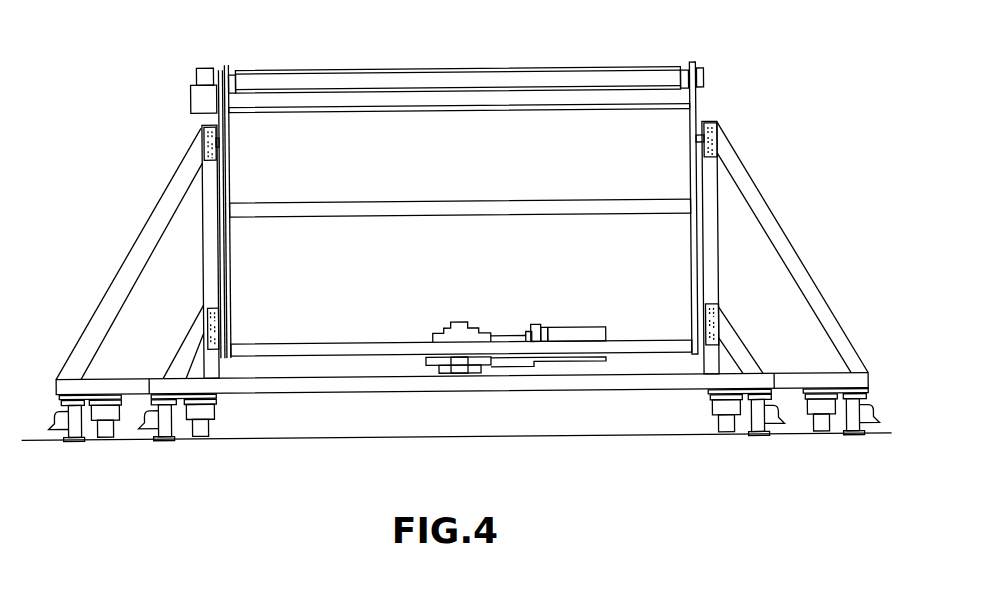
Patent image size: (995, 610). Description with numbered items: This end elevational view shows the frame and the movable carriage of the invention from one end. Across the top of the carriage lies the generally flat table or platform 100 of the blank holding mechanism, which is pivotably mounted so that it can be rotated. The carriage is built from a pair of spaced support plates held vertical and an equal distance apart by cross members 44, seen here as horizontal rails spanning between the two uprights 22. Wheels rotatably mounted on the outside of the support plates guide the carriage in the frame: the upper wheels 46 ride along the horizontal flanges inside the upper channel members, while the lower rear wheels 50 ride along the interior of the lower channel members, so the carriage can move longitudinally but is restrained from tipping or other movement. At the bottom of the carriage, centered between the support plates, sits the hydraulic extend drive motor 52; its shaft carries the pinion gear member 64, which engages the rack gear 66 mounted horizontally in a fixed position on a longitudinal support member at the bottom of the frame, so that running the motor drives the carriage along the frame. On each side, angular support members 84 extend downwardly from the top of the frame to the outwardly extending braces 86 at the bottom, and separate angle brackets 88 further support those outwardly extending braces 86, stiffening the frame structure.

The table or platform 100 is at (635, 78).
The upright post 22 is at (212, 188).
The upper wheels 46 is at (205, 138).
The lower rear wheels 50 is at (232, 313).
The cross members 44 is at (440, 208).
The angular support members 84 is at (137, 242).
The angle brackets 88 is at (193, 347).
The outwardly extending braces 86 is at (112, 385).
The gear member 64 is at (460, 325).
The hydraulic extend drive motor 52 is at (565, 330).
The rack gear 66 is at (458, 367).